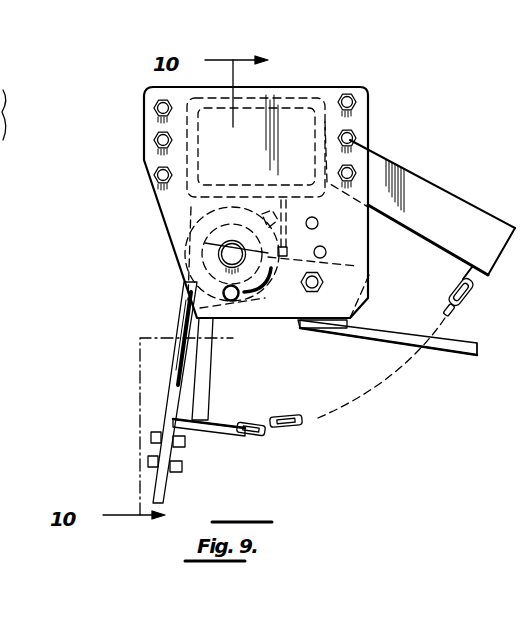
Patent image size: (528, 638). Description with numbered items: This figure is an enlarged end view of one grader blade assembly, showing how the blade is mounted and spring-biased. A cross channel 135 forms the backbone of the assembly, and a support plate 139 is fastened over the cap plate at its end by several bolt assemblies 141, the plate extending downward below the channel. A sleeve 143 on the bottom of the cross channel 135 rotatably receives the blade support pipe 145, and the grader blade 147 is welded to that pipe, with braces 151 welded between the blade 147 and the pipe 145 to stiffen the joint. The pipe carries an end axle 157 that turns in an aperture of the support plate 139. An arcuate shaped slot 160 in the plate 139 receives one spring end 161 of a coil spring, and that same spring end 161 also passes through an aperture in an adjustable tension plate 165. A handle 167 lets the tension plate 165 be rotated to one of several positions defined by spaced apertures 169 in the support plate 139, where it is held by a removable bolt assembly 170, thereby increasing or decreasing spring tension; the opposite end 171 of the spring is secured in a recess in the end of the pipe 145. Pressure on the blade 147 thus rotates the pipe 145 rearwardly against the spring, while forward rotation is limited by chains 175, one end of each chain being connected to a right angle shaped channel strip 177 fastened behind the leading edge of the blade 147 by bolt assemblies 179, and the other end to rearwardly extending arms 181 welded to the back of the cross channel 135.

The cross channel 135 is at (275, 98).
The support plate 139 is at (313, 86).
The bolt assemblies 141 is at (158, 168).
The sleeve 143 is at (192, 222).
The blade support pipe 145 is at (485, 243).
The grader blade 147 is at (182, 322).
The braces 151 is at (213, 372).
The end axles 157 is at (252, 251).
The arcuate shaped slot 160 is at (256, 296).
The spring end 161 is at (233, 303).
The adjustable tension plate 165 is at (319, 328).
The handle 167 is at (453, 353).
The spaced apertures 169 is at (322, 247).
The removable bolt assembly 170 is at (324, 280).
The opposite end of spring 171 is at (266, 212).
The chains 175 is at (284, 430).
The right angle shaped channel strip 177 is at (208, 425).
The bolt assemblies 179 is at (186, 472).
The rearwardly extending arms 181 is at (415, 178).